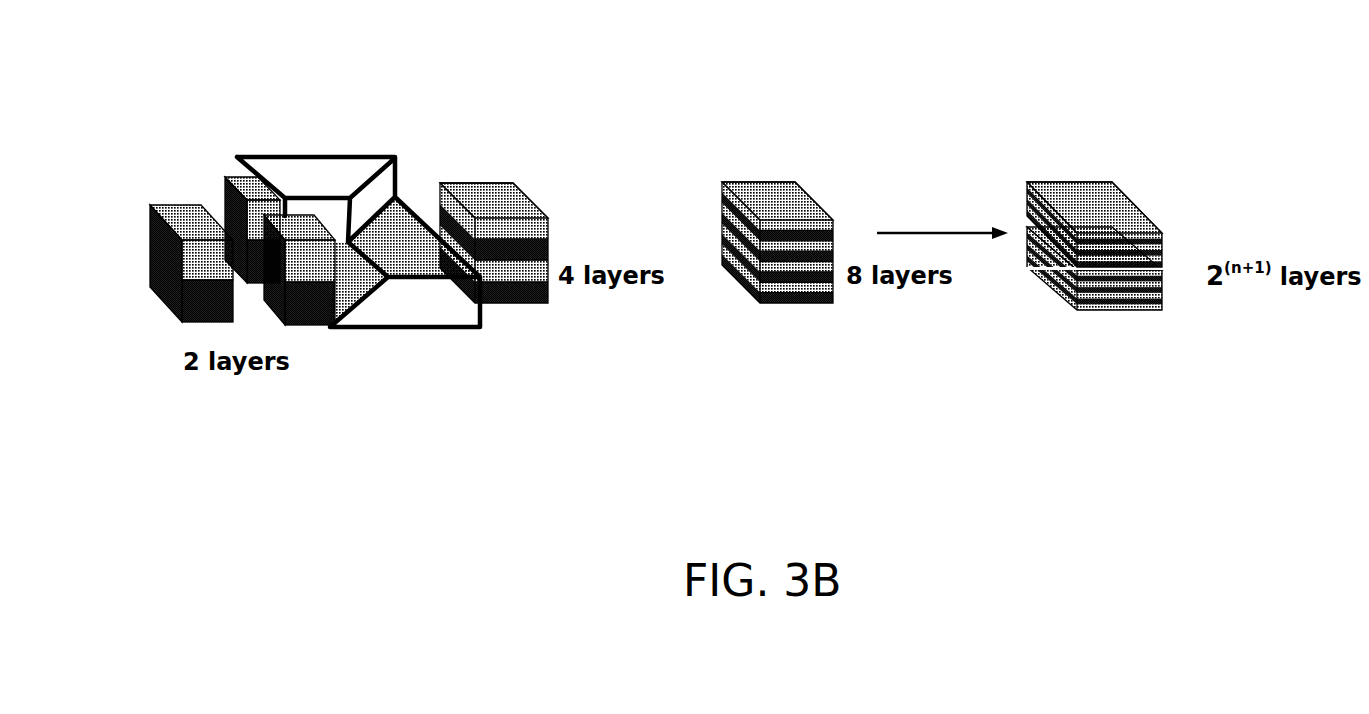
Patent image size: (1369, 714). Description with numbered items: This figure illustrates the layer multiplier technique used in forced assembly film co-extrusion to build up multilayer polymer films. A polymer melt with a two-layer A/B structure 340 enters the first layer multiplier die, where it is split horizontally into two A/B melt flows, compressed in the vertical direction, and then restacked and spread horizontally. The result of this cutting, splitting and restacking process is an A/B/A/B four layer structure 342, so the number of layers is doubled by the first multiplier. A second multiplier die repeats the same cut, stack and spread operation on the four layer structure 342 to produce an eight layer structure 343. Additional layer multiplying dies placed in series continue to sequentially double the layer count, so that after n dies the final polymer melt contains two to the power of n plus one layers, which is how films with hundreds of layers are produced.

The A/B structure 340 is at (172, 297).
The four layer structure 342 is at (518, 272).
The eight layer structure 343 is at (797, 268).